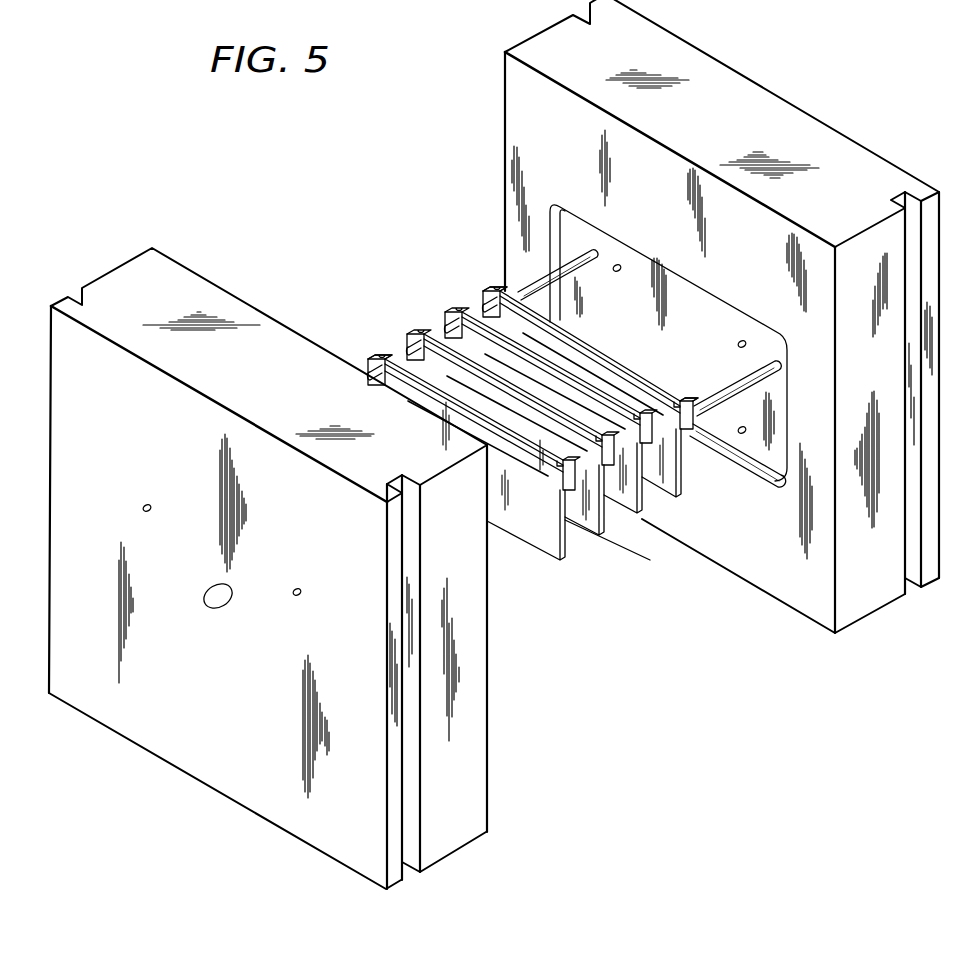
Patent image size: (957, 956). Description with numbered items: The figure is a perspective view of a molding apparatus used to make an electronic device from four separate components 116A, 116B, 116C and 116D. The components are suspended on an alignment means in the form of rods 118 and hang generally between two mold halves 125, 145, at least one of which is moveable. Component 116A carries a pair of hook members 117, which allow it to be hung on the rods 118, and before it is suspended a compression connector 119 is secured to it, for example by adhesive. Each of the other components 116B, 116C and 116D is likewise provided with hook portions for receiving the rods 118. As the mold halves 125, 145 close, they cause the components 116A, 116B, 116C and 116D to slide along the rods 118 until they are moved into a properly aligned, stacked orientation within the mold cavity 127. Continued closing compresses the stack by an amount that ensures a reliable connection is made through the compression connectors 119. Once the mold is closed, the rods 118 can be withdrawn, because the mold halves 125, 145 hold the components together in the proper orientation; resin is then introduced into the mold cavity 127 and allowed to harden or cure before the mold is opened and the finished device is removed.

The mold half 145 is at (147, 273).
The mold half 125 is at (532, 54).
The mold cavity 127 is at (582, 236).
The component 116A is at (665, 477).
The component 116B is at (627, 503).
The component 116C is at (589, 530).
The component 116D is at (547, 547).
The hook member 117 is at (487, 300).
The rod 118 is at (540, 280).
The compression connector 119 is at (583, 345).